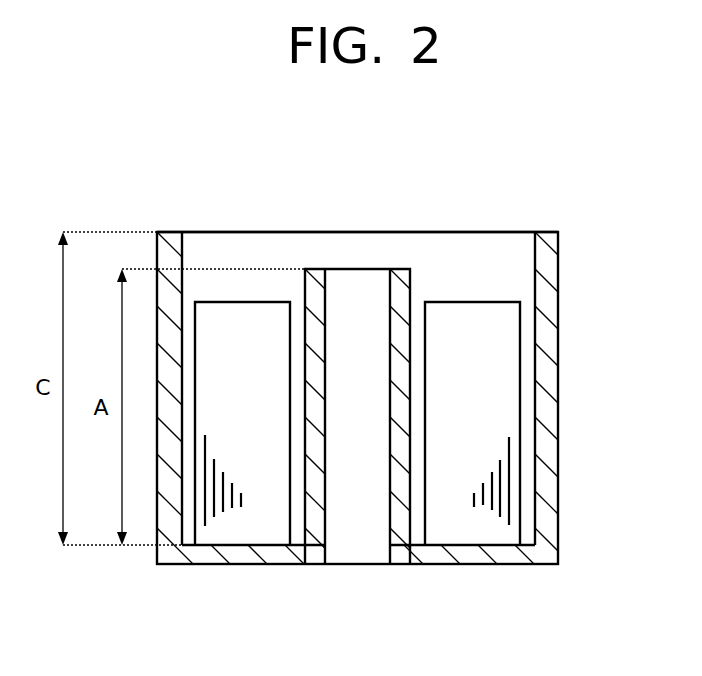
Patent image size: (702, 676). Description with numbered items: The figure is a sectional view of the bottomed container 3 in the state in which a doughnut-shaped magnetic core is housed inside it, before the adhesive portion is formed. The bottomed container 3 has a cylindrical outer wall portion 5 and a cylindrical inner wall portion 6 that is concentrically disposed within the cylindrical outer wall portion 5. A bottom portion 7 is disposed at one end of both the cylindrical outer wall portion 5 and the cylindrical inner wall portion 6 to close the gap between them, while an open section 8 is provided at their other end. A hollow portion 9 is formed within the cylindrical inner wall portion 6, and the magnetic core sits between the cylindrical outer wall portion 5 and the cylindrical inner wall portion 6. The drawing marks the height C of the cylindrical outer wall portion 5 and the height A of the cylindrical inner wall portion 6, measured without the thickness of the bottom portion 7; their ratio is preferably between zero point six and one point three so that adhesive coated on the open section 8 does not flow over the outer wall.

The bottomed container 3 is at (585, 190).
The cylindrical outer wall portion 5 is at (560, 338).
The cylindrical inner wall portion 6 is at (389, 480).
The bottom portion 7 is at (508, 564).
The open section 8 is at (473, 248).
The hollow portion 9 is at (340, 556).